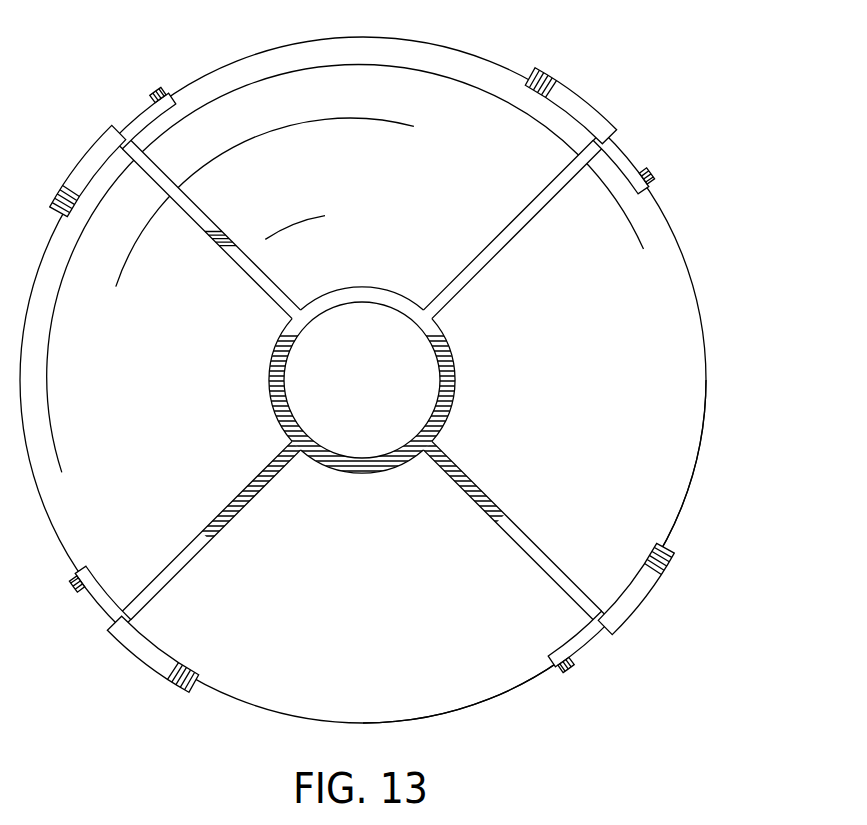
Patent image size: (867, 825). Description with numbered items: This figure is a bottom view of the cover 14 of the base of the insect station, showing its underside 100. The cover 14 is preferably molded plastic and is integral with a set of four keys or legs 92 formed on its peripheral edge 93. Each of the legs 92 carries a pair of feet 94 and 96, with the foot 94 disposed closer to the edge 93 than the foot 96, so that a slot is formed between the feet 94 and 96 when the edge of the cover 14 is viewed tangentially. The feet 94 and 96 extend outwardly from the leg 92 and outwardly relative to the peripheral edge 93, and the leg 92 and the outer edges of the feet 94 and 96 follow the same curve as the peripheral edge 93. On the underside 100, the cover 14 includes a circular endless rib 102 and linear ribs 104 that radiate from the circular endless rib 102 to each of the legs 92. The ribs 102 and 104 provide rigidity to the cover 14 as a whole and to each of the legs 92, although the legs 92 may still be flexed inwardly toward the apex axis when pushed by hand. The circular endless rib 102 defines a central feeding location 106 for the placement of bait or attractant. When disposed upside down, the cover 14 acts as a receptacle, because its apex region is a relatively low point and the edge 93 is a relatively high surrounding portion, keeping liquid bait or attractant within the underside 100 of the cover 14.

The cover 14 is at (272, 50).
The peripheral edge 93 is at (697, 470).
The underside 100 is at (428, 218).
The circular endless rib 102 is at (353, 474).
The linear ribs 104 is at (503, 520).
The central feeding location 106 is at (380, 389).
The legs 92 is at (150, 617).
The foot 94 is at (145, 655).
The foot 96 is at (100, 597).